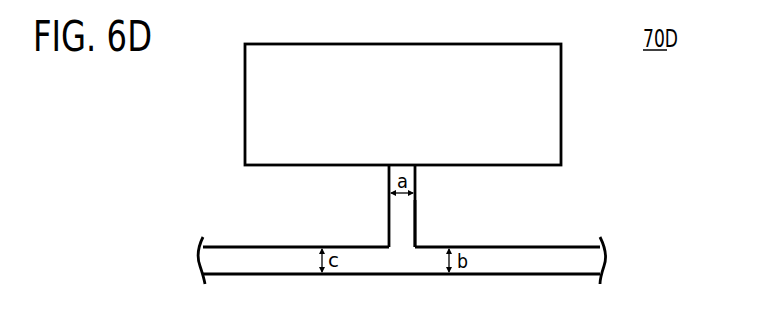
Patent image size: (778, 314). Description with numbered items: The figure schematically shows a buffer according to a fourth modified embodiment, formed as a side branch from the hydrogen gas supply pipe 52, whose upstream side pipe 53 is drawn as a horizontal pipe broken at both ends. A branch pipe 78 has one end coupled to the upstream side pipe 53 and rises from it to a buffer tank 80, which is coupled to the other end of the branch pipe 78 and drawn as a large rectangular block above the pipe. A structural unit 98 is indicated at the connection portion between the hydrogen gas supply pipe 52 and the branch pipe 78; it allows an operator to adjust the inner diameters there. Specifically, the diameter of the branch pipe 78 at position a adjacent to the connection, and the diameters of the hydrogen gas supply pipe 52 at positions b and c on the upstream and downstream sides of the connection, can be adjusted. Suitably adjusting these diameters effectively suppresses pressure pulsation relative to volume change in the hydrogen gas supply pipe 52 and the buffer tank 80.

The buffer tank 80 is at (562, 68).
The branch pipe 78 is at (388, 225).
The structural unit 98 is at (431, 211).
The upstream side pipe 53 is at (401, 236).
The hydrogen gas supply pipe 52 is at (284, 246).